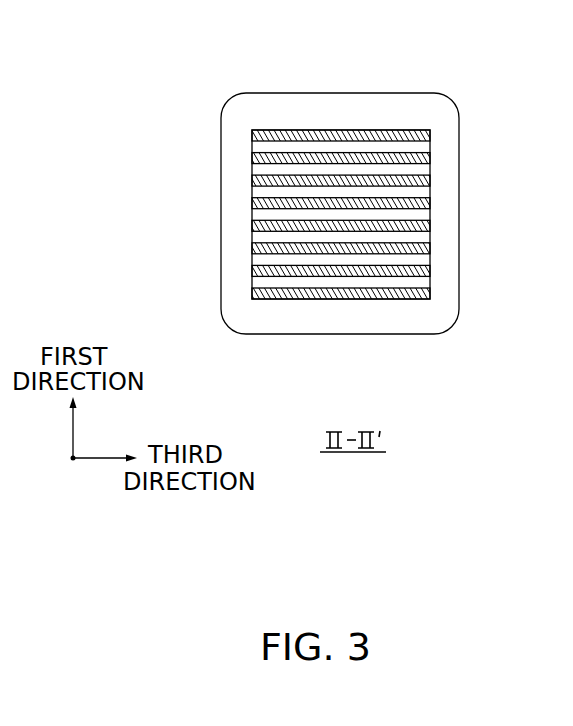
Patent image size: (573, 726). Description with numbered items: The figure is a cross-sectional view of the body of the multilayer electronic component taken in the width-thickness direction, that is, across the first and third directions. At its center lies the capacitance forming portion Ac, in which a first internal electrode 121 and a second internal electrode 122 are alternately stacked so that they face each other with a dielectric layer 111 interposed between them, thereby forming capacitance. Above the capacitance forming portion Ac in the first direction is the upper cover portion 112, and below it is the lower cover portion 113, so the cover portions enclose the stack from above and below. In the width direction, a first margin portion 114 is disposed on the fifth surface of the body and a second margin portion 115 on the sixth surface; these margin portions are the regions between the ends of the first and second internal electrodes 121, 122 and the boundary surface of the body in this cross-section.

The dielectric layer 111 is at (430, 148).
The upper cover portion 112 is at (340, 98).
The lower cover portion 113 is at (337, 322).
The first margin portion 114 is at (230, 241).
The second margin portion 115 is at (453, 243).
The first internal electrode 121 is at (430, 132).
The second internal electrode 122 is at (430, 158).
The capacitance forming portion Ac is at (252, 218).